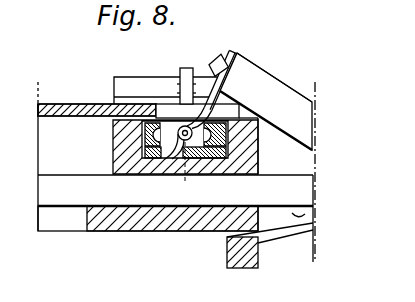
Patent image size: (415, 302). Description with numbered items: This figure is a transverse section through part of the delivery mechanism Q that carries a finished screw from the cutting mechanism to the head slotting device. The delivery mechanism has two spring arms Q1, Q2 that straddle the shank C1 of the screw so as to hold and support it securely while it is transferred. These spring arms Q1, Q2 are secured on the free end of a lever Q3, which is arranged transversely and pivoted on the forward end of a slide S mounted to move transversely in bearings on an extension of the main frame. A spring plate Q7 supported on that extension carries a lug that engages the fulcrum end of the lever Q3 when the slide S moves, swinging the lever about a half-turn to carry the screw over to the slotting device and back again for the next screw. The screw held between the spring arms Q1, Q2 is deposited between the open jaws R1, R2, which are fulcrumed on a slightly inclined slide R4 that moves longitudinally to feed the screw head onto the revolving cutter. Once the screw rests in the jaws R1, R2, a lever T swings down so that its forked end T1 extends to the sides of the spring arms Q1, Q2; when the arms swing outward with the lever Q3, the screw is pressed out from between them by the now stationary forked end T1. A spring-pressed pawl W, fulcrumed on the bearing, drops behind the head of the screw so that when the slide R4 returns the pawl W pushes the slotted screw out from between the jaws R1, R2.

The lever T is at (70, 104).
The forked end T1 is at (170, 112).
The pawl W is at (187, 68).
The spring arm Q2 is at (225, 59).
The spring arm Q1 is at (236, 55).
The lever Q3 is at (265, 73).
The delivery mechanism Q is at (329, 172).
The jaw R1 is at (142, 135).
The slide R4 is at (142, 154).
The jaw R2 is at (258, 147).
The shank C1 is at (175, 190).
The slide S is at (155, 195).
The spring plate Q7 is at (300, 235).